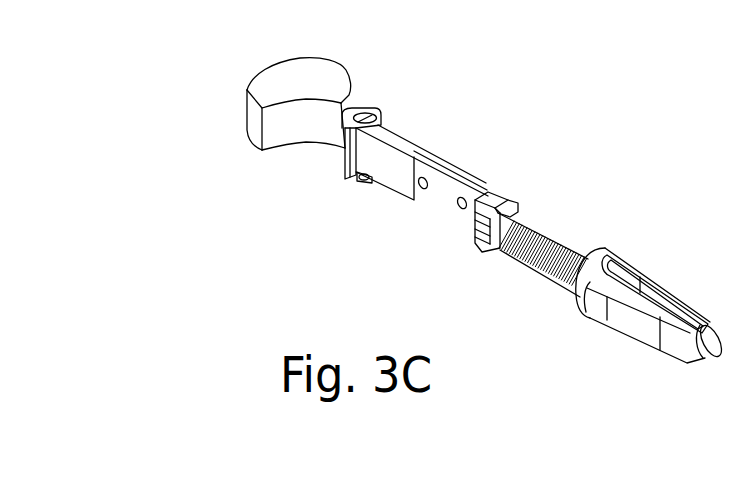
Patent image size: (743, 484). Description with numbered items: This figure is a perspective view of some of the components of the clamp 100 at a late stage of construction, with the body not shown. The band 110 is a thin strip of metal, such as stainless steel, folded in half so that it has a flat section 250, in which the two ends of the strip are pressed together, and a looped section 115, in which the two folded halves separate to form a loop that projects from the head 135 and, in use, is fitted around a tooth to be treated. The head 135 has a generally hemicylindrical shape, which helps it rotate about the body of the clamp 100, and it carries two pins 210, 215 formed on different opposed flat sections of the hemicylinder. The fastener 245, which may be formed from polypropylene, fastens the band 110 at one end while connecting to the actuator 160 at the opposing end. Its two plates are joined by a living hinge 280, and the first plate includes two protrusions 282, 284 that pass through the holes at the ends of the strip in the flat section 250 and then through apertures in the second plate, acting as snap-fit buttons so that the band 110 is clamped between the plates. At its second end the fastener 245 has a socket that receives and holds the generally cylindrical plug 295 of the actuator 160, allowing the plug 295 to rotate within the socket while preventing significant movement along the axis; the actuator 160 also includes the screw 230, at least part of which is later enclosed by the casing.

The clamp 100 is at (186, 106).
The band 110 is at (328, 137).
The looped section 115 is at (292, 69).
The head 135 is at (342, 176).
The pin 210 is at (357, 186).
The pin 215 is at (365, 113).
The fastener 245 is at (443, 180).
The flat section 250 is at (393, 136).
The hinge 280 is at (470, 181).
The protrusion 282 is at (420, 188).
The protrusion 284 is at (460, 210).
The plug 295 is at (487, 226).
The screw 230 is at (553, 278).
The actuator 160 is at (628, 264).